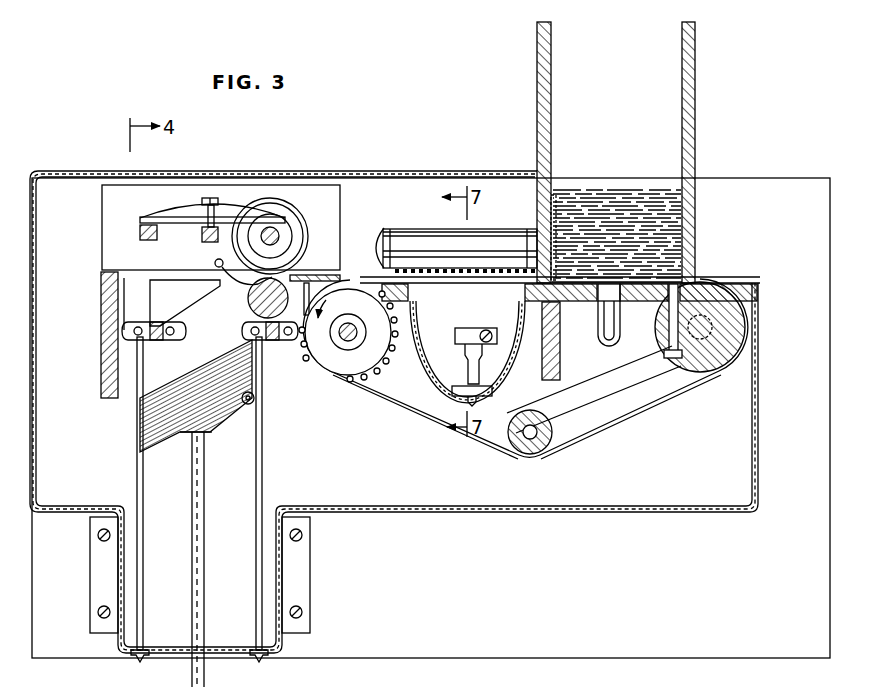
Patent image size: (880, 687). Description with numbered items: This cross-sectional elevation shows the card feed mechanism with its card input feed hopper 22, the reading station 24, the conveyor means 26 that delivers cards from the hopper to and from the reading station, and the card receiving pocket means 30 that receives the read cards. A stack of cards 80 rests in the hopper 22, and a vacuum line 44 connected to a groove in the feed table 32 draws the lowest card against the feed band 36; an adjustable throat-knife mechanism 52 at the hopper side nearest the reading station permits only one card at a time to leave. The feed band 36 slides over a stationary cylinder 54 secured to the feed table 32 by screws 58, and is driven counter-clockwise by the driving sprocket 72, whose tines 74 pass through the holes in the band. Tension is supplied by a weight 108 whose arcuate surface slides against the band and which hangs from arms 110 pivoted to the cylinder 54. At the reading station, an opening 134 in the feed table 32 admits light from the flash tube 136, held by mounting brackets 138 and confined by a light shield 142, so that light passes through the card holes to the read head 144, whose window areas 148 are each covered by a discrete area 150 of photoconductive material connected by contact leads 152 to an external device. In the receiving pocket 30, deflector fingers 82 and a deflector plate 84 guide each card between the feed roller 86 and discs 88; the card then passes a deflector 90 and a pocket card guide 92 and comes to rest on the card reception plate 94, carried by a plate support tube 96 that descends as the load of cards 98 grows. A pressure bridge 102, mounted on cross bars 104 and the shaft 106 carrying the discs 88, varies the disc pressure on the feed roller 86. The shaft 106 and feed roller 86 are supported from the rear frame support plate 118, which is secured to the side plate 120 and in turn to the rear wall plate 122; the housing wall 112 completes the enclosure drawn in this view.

The card input feed hopper 22 is at (696, 74).
The reading station 24 is at (522, 198).
The conveyor means 26 is at (738, 392).
The card receiving pocket means 30 is at (240, 493).
The feed table 32 is at (700, 284).
The feed band 36 is at (628, 420).
The vacuum line 44 is at (605, 318).
The throat-knife mechanism 52 is at (556, 262).
The stationary cylinder 54 is at (722, 322).
The screws 58 is at (705, 318).
The driving sprocket 72 is at (325, 355).
The tines 74 is at (370, 368).
The stack of cards 80 is at (658, 196).
The deflector fingers 82 is at (346, 280).
The deflector plate 84 is at (306, 283).
The feed roller 86 is at (252, 302).
The discs 88 is at (272, 198).
The deflector 90 is at (240, 280).
The pocket card guide 92 is at (160, 282).
The card reception plate 94 is at (246, 406).
The plate support tube 96 is at (206, 676).
The load of cards 98 is at (143, 437).
The pressure bridge 102 is at (228, 206).
The cross bars 104 is at (210, 242).
The shaft 106 is at (278, 232).
The weight 108 is at (510, 455).
The arms 110 is at (604, 367).
The housing bottom wall 112 is at (513, 513).
The rear frame support plate 118 is at (118, 196).
The side plate 120 is at (104, 313).
The rear wall plate 122 is at (407, 652).
The opening 134 is at (520, 290).
The flash tube 136 is at (462, 366).
The mounting brackets 138 is at (472, 330).
The light shield 142 is at (440, 382).
The read head 144 is at (462, 268).
The window areas 148 is at (442, 256).
The discrete areas 150 is at (452, 258).
The contact leads 152 is at (390, 235).